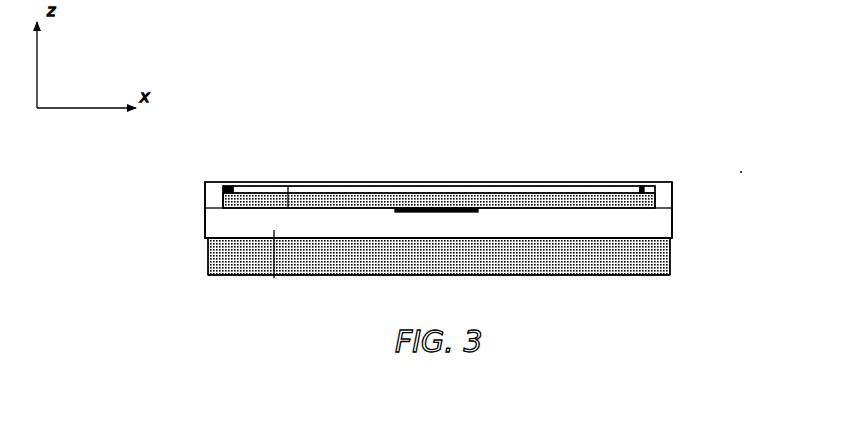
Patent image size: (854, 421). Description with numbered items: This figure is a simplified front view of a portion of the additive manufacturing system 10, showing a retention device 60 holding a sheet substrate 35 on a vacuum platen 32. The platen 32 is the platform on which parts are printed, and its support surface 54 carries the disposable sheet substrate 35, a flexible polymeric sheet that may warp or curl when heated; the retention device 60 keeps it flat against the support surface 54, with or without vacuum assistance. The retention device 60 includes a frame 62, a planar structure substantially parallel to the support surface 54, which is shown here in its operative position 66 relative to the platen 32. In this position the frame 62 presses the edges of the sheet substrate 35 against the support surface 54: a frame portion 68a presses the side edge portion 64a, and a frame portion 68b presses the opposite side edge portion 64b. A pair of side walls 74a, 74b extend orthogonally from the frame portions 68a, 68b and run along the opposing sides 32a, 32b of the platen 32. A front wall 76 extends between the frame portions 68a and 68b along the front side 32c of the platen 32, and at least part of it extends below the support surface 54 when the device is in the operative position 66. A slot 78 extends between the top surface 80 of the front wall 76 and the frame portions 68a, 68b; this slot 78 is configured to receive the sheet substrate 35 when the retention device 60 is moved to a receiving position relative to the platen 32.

The system 10 is at (636, 91).
The vacuum platen 32 is at (623, 274).
The side of platen 32a is at (208, 251).
The side of platen 32b is at (670, 263).
The front side of platen 32c is at (227, 278).
The sheet substrate 35 is at (357, 192).
The support surface 54 is at (288, 188).
The retention device 60 is at (212, 222).
The frame 62 is at (661, 182).
The side edge portion 64a is at (232, 185).
The side edge portion 64b is at (646, 184).
The operative position 66 is at (729, 175).
The frame portion 68a is at (229, 190).
The frame portion 68b is at (655, 186).
The side wall 74a is at (207, 206).
The side wall 74b is at (672, 222).
The front wall 76 is at (274, 278).
The slot 78 is at (222, 200).
The top surface 80 is at (523, 200).